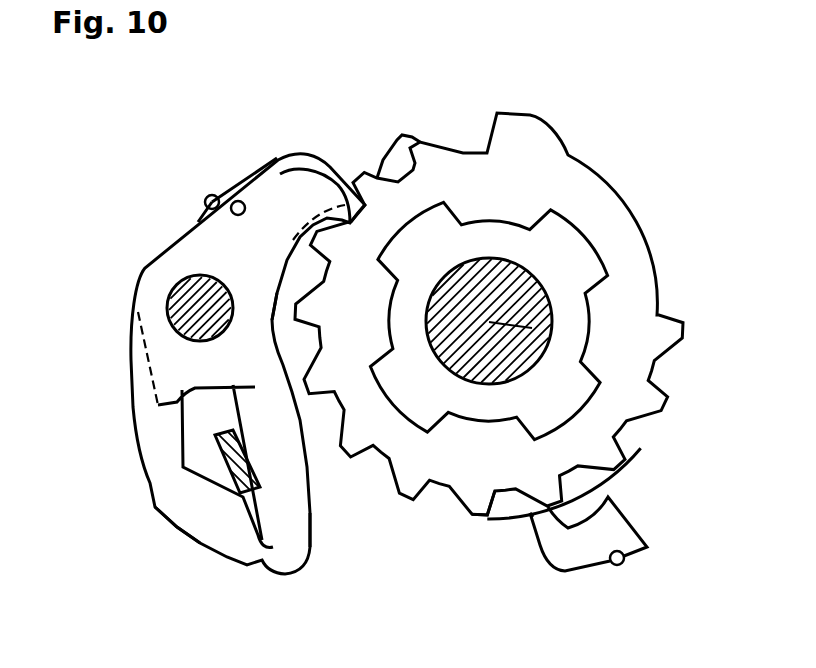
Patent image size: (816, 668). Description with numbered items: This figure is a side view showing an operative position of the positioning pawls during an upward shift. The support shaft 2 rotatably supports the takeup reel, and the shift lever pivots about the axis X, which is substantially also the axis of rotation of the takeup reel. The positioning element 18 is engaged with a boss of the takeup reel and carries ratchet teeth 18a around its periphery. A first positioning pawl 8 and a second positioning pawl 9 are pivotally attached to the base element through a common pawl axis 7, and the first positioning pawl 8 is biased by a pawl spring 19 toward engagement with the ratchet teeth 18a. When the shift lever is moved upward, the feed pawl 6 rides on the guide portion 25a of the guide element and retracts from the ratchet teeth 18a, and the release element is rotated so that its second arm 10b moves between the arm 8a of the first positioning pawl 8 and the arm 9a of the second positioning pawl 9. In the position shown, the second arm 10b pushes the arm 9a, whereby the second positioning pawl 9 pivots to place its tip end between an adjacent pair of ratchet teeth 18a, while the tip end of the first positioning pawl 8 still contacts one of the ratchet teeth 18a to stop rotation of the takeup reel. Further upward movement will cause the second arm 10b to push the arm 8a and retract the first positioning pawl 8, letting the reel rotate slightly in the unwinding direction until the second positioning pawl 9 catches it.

The support shaft 2 is at (492, 440).
The feed pawl 6 is at (630, 523).
The pawl axis 7 is at (166, 310).
The first positioning pawl 8 is at (321, 155).
The arm of the first positioning pawl 8a is at (300, 527).
The second positioning pawl 9 is at (280, 177).
The arm of the second positioning pawl 9a is at (193, 535).
The second arm of the release element 10b is at (215, 448).
The positioning element 18 is at (592, 203).
The ratchet teeth 18a is at (412, 140).
The pawl spring 19 is at (205, 196).
The guide portion 25a is at (527, 513).
The axis X is at (595, 328).